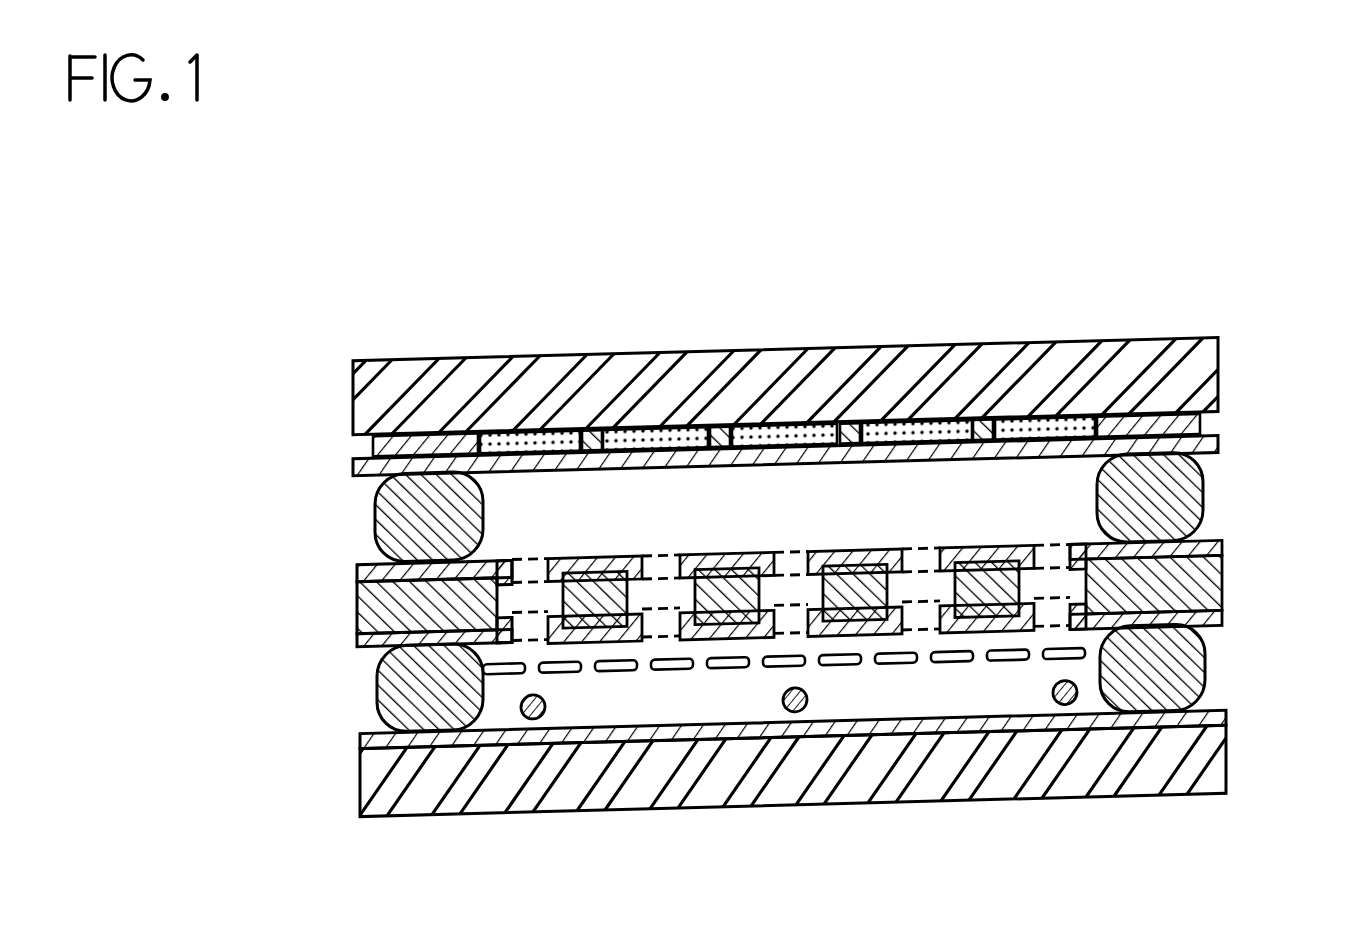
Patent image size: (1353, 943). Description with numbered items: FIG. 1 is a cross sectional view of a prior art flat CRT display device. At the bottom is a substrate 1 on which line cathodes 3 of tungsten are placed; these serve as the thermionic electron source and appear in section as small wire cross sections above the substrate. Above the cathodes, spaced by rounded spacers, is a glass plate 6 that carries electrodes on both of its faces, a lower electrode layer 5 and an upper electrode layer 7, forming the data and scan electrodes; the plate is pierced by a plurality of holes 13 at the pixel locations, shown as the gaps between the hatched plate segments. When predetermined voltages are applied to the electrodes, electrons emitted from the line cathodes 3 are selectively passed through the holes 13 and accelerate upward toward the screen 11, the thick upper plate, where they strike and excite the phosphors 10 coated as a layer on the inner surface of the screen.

The lower substrate 1 is at (761, 827).
The spacer 3 is at (799, 787).
The lower electrode layer 5 is at (1191, 647).
The partition wall 6 is at (1207, 585).
The upper electrode layer 7 is at (1193, 525).
The phosphor layer 10 is at (786, 370).
The upper substrate 11 is at (784, 337).
The spacer member 13 is at (791, 565).